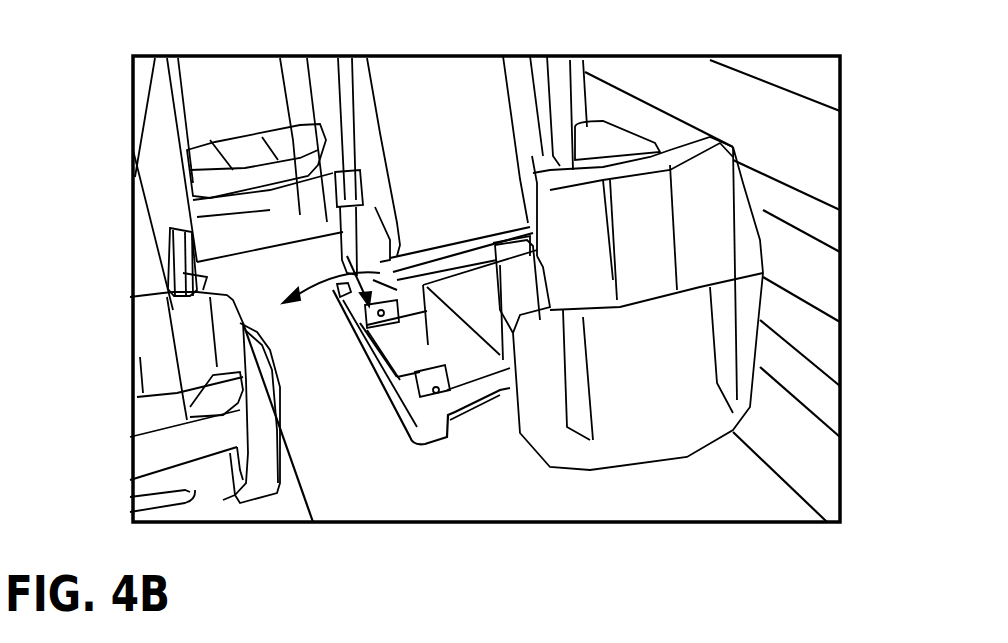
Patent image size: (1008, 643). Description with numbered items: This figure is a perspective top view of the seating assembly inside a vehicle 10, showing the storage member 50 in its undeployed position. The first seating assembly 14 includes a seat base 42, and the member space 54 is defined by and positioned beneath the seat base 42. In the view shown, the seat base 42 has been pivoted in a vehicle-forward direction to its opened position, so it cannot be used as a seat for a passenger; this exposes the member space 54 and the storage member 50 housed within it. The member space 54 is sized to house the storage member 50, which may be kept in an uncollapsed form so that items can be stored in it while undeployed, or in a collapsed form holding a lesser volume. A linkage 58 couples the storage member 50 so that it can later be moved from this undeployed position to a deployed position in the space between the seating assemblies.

The vehicle 10 is at (717, 45).
The first seating assembly 14 is at (603, 94).
The seat base 42 is at (690, 430).
The storage member 50 is at (487, 397).
The member space 54 is at (447, 240).
The linkage 58 is at (463, 357).